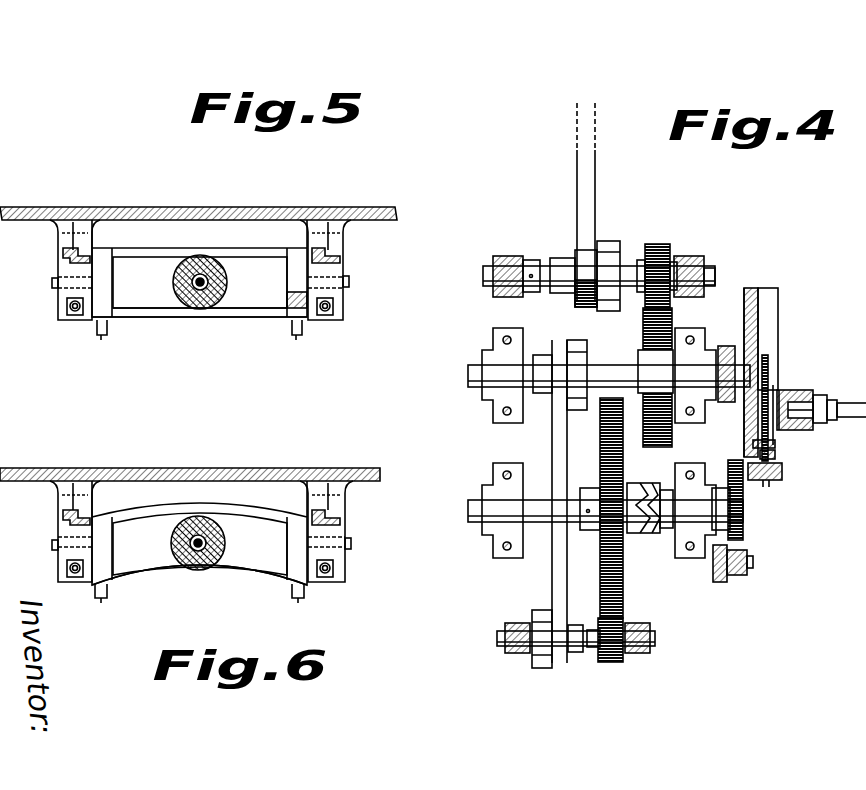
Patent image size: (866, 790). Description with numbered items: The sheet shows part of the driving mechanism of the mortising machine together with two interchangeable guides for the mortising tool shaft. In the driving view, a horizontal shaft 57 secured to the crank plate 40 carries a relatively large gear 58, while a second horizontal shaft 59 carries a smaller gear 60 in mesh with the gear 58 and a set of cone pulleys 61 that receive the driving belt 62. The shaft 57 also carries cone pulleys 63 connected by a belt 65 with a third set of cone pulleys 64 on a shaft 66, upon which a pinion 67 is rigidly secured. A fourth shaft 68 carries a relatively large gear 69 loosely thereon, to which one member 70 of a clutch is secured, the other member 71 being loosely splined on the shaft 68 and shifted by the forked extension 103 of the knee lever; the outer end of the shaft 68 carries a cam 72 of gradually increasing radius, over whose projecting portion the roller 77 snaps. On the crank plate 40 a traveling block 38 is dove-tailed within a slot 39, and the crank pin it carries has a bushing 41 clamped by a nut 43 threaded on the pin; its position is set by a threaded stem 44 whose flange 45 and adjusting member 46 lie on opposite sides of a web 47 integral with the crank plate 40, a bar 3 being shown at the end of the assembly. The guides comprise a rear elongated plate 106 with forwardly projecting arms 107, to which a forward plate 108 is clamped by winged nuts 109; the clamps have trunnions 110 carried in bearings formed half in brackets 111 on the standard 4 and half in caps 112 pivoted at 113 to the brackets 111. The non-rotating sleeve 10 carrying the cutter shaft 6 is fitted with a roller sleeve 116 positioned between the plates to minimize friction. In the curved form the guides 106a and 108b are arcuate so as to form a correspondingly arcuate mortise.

In FIG. 4, the bar 3 is at (842, 407).
In FIG. 5, the standard 4 is at (166, 206).
In FIG. 6, the standard 4 is at (134, 481).
In FIG. 5, the shaft 6 is at (228, 283).
In FIG. 6, the shaft 6 is at (223, 545).
In FIG. 5, the sleeve 10 is at (186, 304).
In FIG. 6, the sleeve 10 is at (197, 565).
In FIG. 4, the traveling block 38 is at (776, 386).
In FIG. 4, the slot 39 is at (771, 323).
In FIG. 4, the crank plate 40 is at (745, 319).
In FIG. 4, the bushing 41 is at (781, 393).
In FIG. 4, the nut 43 is at (823, 395).
In FIG. 4, the threaded stem 44 is at (767, 353).
In FIG. 4, the flange 45 is at (776, 445).
In FIG. 4, the adjusting member 46 is at (766, 481).
In FIG. 4, the web 47 is at (777, 457).
In FIG. 4, the shaft 57 is at (479, 370).
In FIG. 4, the gear 58 is at (643, 335).
In FIG. 4, the second horizontal shaft 59 is at (714, 265).
In FIG. 4, the gear 60 is at (658, 243).
In FIG. 4, the cone pulleys 61 is at (606, 250).
In FIG. 4, the driving belt 62 is at (583, 195).
In FIG. 4, the cone pulleys 63 is at (576, 340).
In FIG. 4, the cone pulleys 64 is at (545, 668).
In FIG. 4, the belt 65 is at (556, 577).
In FIG. 4, the shaft 66 is at (657, 637).
In FIG. 4, the pinion 67 is at (609, 663).
In FIG. 4, the fourth shaft 68 is at (477, 509).
In FIG. 4, the gear 69 is at (599, 440).
In FIG. 4, the clutch member 70 is at (631, 485).
In FIG. 4, the clutch member 71 is at (655, 534).
In FIG. 4, the cam 72 is at (744, 537).
In FIG. 4, the roller 77 is at (733, 576).
In FIG. 4, the forked extension 103 is at (664, 534).
In FIG. 5, the rear elongated plate 106 is at (153, 248).
In FIG. 6, the curved guide 106a is at (164, 510).
In FIG. 5, the arms 107 is at (115, 297).
In FIG. 6, the arms 107 is at (114, 567).
In FIG. 5, the forward plate 108 is at (216, 319).
In FIG. 6, the curved guide 108b is at (157, 580).
In FIG. 5, the winged nuts 109 is at (108, 325).
In FIG. 5, the trunnions 110 is at (53, 285).
In FIG. 6, the trunnions 110 is at (55, 546).
In FIG. 5, the brackets 111 is at (341, 220).
In FIG. 6, the brackets 111 is at (346, 498).
In FIG. 5, the caps 112 is at (66, 276).
In FIG. 5, the pivot 113 is at (66, 248).
In FIG. 6, the pivot 113 is at (66, 512).
In FIG. 5, the roller sleeve 116 is at (222, 268).
In FIG. 6, the roller sleeve 116 is at (222, 528).